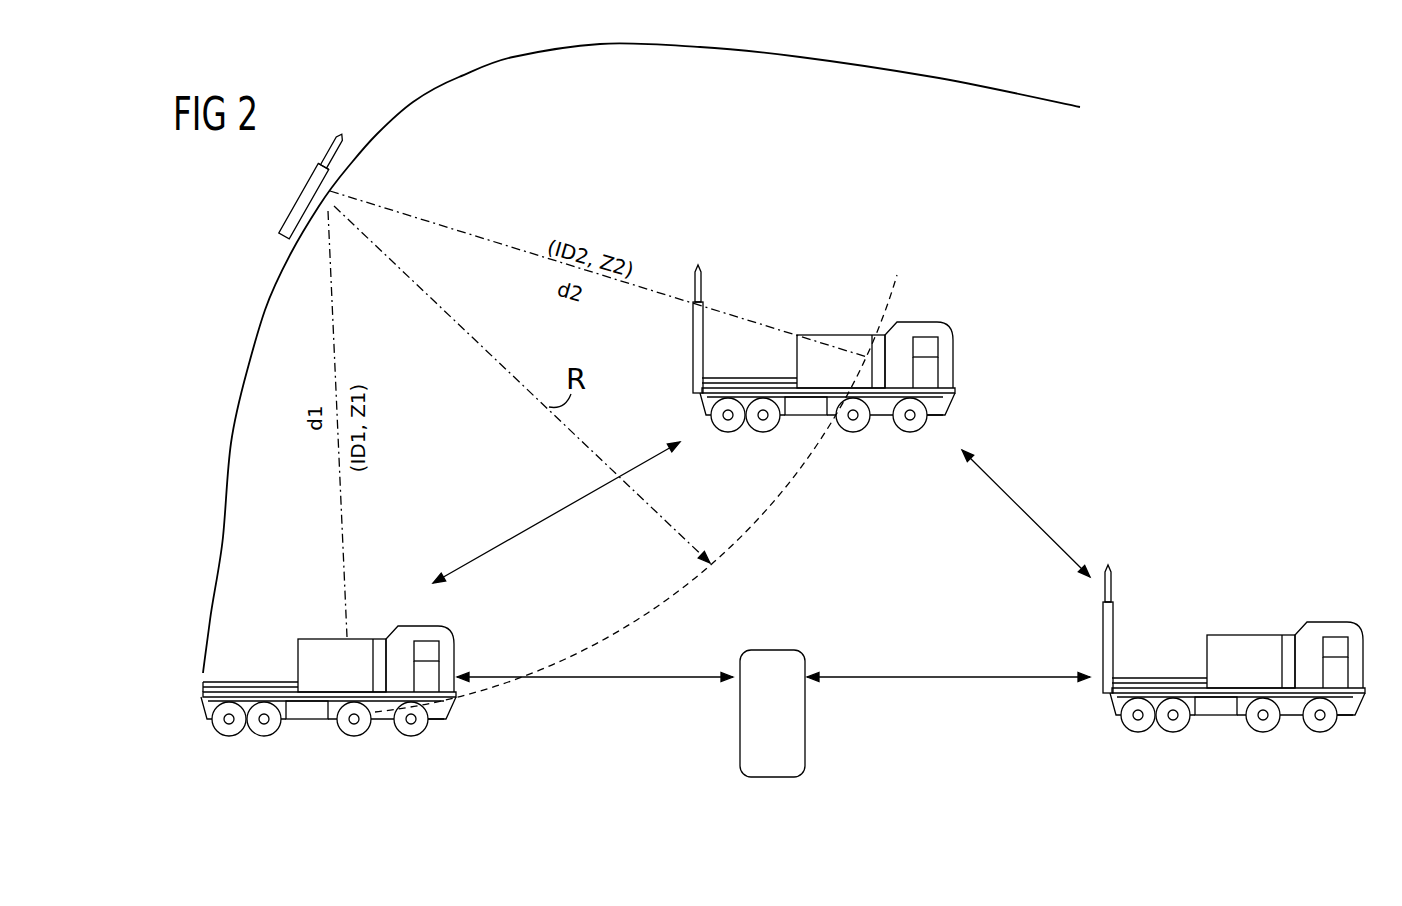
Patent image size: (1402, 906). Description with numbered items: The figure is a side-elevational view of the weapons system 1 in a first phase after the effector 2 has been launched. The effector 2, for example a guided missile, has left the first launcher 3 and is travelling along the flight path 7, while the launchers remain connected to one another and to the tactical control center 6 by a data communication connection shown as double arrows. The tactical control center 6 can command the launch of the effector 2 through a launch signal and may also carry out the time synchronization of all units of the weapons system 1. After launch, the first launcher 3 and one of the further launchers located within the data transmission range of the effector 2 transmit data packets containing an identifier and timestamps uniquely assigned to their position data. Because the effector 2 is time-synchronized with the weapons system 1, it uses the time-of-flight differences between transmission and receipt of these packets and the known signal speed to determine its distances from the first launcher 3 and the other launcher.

The weapons system 1 is at (1088, 216).
The effector 2 is at (298, 207).
The first launcher 3 is at (440, 717).
The tactical control center 6 is at (805, 740).
The flight path 7 is at (638, 46).